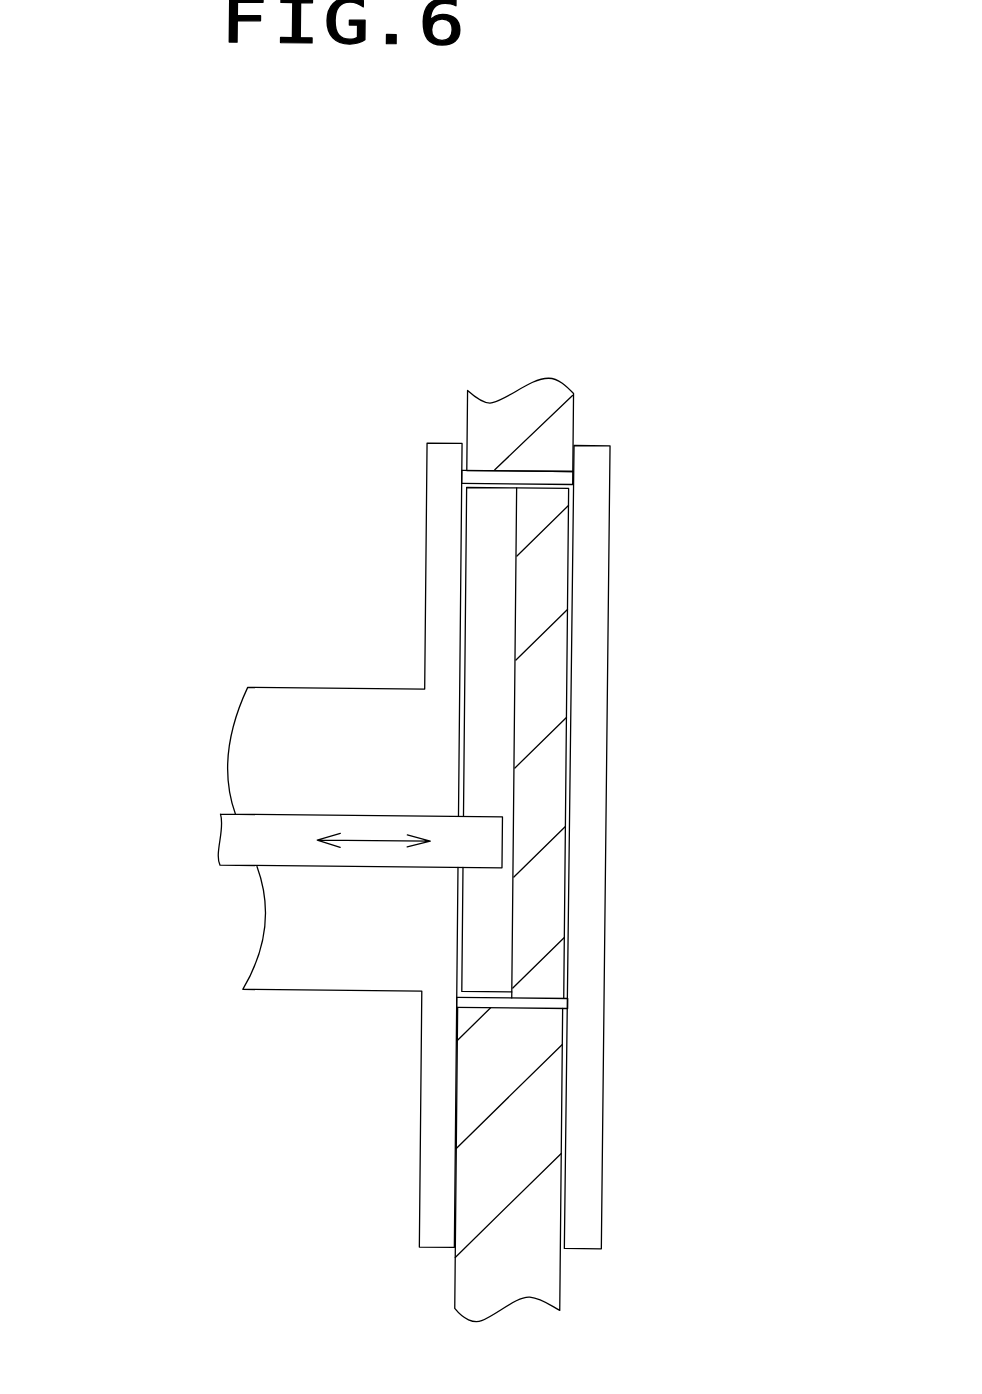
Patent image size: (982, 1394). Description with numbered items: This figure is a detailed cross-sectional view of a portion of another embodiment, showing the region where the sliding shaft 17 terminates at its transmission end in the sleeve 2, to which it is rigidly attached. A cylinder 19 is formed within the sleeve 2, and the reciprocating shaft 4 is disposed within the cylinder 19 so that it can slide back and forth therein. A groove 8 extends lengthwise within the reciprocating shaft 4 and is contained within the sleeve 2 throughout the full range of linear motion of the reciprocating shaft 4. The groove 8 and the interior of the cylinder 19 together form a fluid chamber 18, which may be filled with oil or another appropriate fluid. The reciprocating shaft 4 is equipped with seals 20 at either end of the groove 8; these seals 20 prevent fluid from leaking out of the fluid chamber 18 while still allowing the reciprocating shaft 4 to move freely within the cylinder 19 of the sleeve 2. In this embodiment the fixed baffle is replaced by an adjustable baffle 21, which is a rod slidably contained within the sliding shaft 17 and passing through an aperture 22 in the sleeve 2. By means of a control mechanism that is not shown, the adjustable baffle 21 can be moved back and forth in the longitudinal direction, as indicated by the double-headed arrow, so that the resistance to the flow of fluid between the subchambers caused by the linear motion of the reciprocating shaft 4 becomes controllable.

The sleeve 2 is at (592, 884).
The reciprocating shaft 4 is at (545, 437).
The groove 8 is at (520, 678).
The sliding shaft 17 is at (377, 951).
The fluid chamber 18 is at (497, 628).
The cylinder 19 is at (574, 1086).
The seals 20 is at (493, 477).
The adjustable baffle 21 is at (261, 841).
The aperture 22 is at (416, 871).